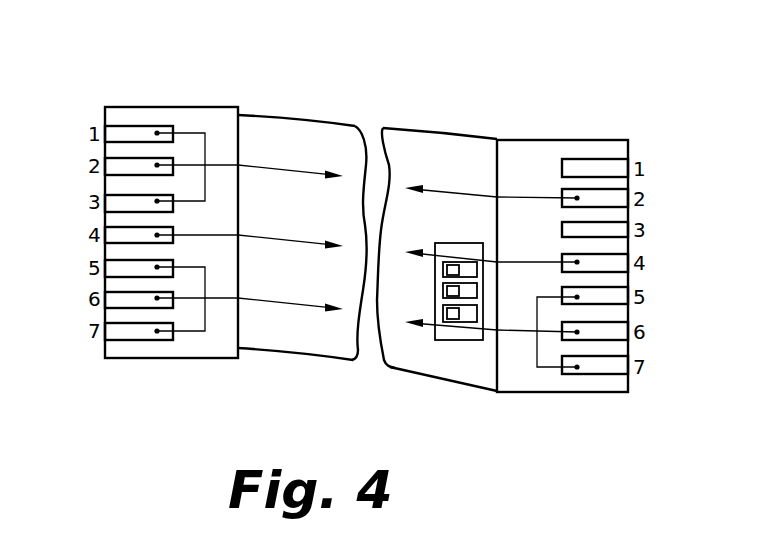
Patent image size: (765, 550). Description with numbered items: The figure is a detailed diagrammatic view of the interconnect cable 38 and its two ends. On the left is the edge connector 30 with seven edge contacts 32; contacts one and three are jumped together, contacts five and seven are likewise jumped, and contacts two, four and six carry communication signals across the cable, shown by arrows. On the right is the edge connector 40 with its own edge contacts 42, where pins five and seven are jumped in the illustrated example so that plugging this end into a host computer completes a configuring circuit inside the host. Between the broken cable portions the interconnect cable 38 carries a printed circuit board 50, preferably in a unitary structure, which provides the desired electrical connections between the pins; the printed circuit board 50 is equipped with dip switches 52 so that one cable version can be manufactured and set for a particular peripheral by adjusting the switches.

The edge connector 30 is at (203, 107).
The edge contacts 32 is at (126, 127).
The interconnect cable 38 is at (468, 79).
The edge connector 40 is at (560, 138).
The edge contacts 42 is at (598, 168).
The printed circuit board 50 is at (463, 340).
The dip switches 52 is at (463, 262).